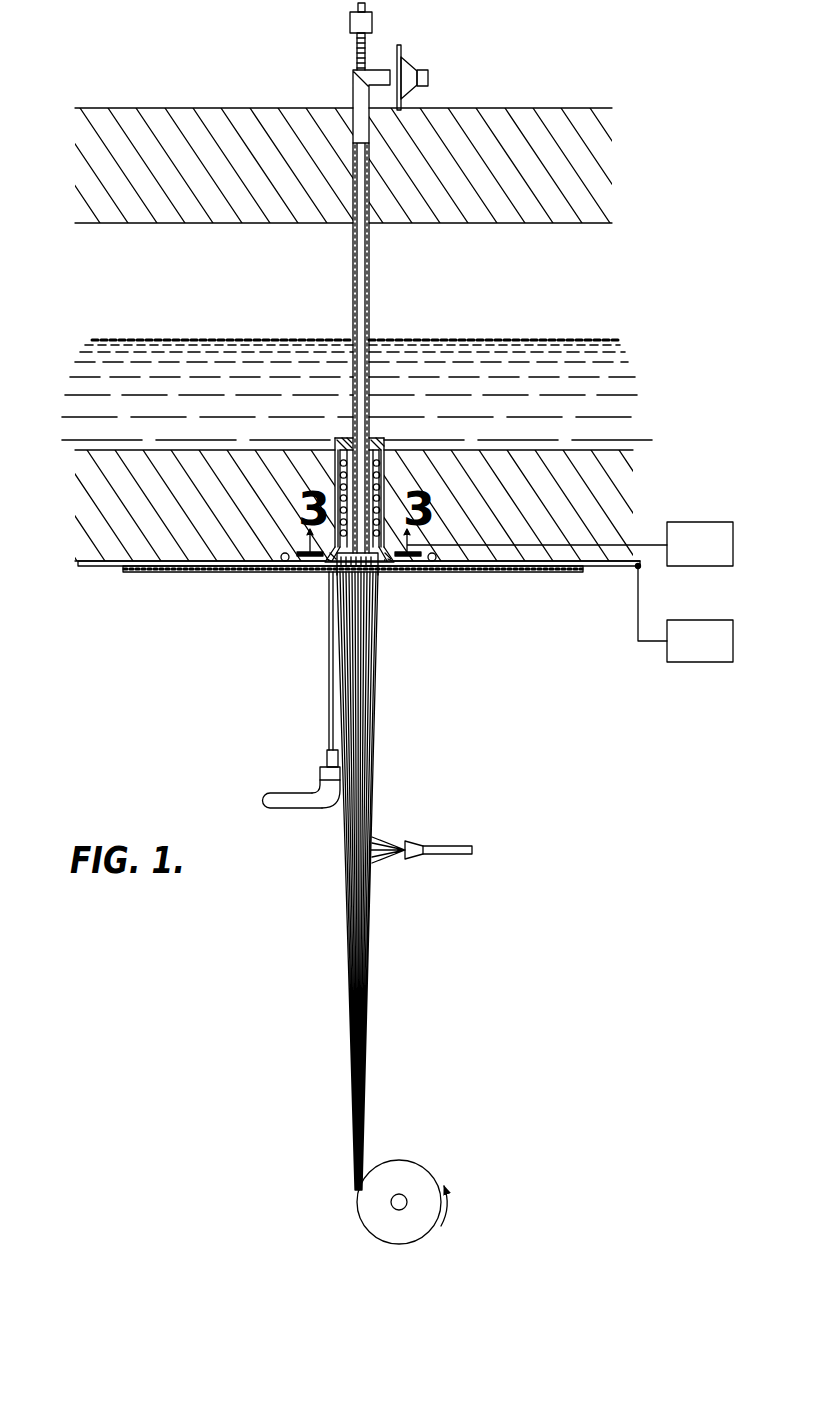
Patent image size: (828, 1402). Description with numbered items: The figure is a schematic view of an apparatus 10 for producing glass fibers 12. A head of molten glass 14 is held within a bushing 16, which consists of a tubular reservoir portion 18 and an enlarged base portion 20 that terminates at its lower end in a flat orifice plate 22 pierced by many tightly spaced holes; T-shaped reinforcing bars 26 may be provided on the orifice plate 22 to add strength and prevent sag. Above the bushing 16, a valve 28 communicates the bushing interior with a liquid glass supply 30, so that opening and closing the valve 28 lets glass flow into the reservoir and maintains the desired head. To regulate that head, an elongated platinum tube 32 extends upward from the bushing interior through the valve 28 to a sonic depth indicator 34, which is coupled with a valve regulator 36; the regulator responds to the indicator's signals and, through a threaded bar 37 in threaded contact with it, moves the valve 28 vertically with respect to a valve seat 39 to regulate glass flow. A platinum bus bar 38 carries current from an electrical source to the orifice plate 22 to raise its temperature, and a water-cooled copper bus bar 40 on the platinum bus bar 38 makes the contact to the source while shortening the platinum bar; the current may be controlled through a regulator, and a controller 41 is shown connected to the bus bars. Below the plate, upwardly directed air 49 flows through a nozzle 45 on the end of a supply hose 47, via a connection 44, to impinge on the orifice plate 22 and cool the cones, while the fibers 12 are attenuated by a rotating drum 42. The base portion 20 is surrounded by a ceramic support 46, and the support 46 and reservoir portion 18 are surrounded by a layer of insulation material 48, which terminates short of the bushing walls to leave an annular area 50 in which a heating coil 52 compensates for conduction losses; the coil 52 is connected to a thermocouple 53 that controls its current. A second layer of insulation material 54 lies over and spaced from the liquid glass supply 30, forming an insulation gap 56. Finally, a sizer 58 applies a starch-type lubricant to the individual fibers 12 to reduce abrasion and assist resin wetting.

The apparatus 10 is at (400, 612).
The glass fibers 12 is at (377, 773).
The head of molten glass 14 is at (395, 449).
The bushing 16 is at (397, 473).
The tubular reservoir portion 18 is at (383, 504).
The enlarged base portion 20 is at (410, 552).
The orifice plate 22 is at (380, 578).
The T-shaped reinforcing bars 26 is at (337, 572).
The valve 28 is at (350, 437).
The liquid glass supply 30 is at (455, 352).
The elongated platinum tube 32 is at (369, 312).
The sonic depth indicator 34 is at (404, 68).
The valve regulator 36 is at (372, 20).
The threaded bar 37 is at (357, 52).
The platinum bus bar 38 is at (436, 572).
The valve seat 39 is at (386, 437).
The water-cooled copper bus bar 40 is at (484, 567).
The controller 41 is at (713, 663).
The rotating drum 42 is at (404, 1172).
The connection 44 is at (290, 786).
The nozzle 45 is at (330, 758).
The ceramic support 46 is at (325, 561).
The supply hose 47 is at (295, 803).
The insulation material 48 is at (590, 487).
The upwardly directed air 49 is at (330, 695).
The annular area 50 is at (335, 482).
The heating coil 52 is at (337, 466).
The thermocouple 53 is at (698, 522).
The second layer of insulation material 54 is at (548, 108).
The insulation gap 56 is at (533, 287).
The sizer 58 is at (450, 858).